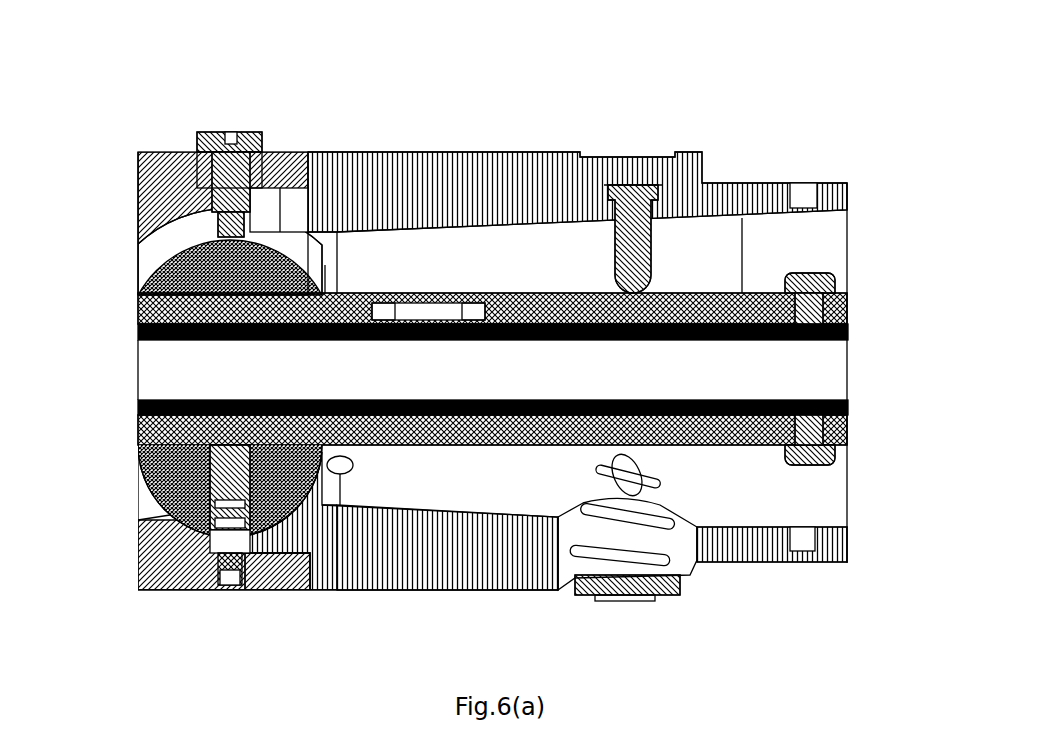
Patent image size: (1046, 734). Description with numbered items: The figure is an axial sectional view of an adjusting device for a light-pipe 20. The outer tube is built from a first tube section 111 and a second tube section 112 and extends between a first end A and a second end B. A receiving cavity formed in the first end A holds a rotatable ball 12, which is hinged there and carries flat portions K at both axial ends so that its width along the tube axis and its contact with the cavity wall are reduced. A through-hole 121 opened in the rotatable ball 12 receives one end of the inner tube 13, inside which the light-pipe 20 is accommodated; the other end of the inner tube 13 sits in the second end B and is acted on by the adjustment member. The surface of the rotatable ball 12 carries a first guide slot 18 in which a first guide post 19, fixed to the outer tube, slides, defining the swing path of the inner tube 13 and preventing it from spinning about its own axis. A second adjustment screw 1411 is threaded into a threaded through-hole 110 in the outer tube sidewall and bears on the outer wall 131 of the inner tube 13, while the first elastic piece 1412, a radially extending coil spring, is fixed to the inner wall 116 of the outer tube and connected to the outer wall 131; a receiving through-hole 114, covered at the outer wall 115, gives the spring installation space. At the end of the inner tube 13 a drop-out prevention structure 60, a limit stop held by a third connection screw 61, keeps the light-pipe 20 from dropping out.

The second tube section 112 is at (165, 182).
The rotatable ball 12 is at (200, 270).
The through-hole 121 is at (192, 298).
The first guide post 19 is at (228, 132).
The first guide slot 18 is at (272, 235).
The first tube section 111 is at (440, 192).
The outer wall of the inner tube 131 is at (742, 218).
The second adjustment screw 1411 is at (637, 208).
The threaded through-hole 110 is at (612, 196).
The inner tube 13 is at (546, 303).
The light-pipe 20 is at (413, 420).
The drop-out prevention structure 60 is at (848, 320).
The third connection screw 61 is at (830, 285).
The outer wall of the outer tube 115 is at (505, 590).
The receiving through-hole 114 is at (675, 548).
The first elastic piece 1412 is at (623, 517).
The inner wall of the outer tube 116 is at (760, 527).
The first end A is at (140, 195).
The second end B is at (848, 197).
The flat portions K is at (323, 292).